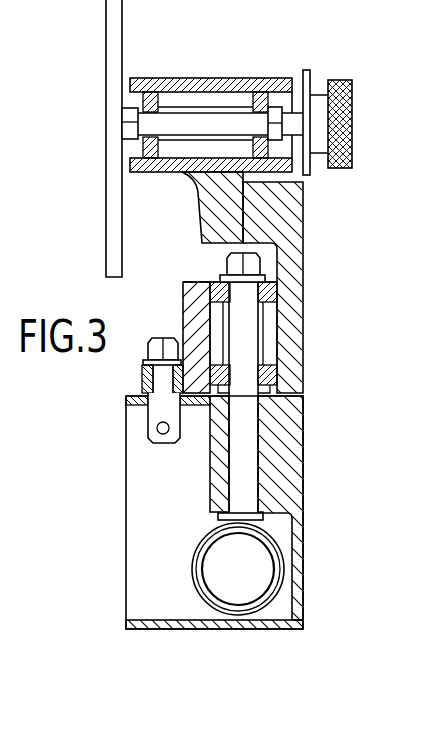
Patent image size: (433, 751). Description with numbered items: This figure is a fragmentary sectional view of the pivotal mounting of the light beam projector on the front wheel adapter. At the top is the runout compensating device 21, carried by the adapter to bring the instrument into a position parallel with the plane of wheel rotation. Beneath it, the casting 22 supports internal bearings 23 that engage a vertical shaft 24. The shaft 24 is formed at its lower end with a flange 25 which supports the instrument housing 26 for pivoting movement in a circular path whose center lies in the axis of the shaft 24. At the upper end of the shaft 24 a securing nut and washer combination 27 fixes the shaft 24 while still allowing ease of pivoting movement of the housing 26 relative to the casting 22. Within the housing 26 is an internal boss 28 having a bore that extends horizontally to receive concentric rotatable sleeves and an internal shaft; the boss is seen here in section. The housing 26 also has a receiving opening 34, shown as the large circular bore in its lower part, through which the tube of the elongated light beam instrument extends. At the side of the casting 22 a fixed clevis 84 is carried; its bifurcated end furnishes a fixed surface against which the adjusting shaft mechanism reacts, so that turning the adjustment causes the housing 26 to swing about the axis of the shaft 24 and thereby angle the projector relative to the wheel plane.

The runout compensating device 21 is at (186, 68).
The casting 22 is at (301, 238).
The internal bearings 23 is at (210, 292).
The vertical shaft 24 is at (245, 430).
The flange 25 is at (218, 520).
The instrument housing 26 is at (294, 467).
The securing nut and washer combination 27 is at (229, 268).
The internal boss 28 is at (211, 473).
The receiving opening 34 is at (284, 563).
The fixed clevis 84 is at (147, 434).